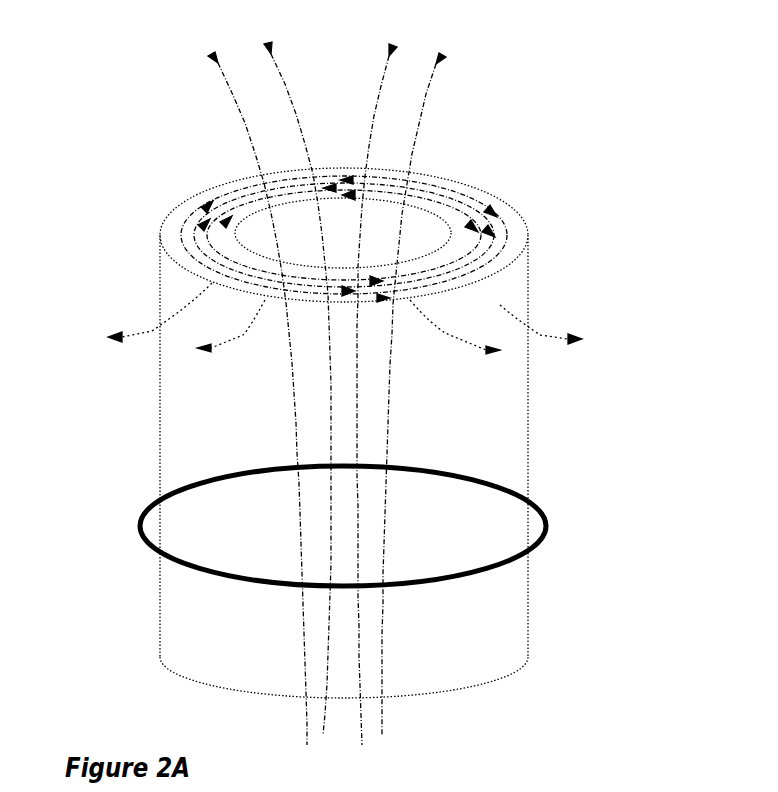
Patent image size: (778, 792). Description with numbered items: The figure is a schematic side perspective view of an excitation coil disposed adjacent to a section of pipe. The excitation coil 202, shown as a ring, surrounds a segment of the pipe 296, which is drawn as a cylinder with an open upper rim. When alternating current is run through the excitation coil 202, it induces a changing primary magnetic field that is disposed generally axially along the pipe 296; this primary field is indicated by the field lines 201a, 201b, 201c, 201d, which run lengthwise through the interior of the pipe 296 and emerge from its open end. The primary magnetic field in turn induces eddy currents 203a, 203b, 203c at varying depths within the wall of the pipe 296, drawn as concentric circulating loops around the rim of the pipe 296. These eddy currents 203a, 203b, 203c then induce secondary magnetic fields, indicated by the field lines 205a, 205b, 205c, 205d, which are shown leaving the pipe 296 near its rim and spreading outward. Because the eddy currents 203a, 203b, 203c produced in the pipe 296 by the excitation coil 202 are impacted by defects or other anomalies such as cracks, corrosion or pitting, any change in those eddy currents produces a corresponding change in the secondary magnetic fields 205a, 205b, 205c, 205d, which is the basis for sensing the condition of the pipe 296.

The field line 201a is at (228, 72).
The field line 201b is at (281, 64).
The field line 201c is at (383, 71).
The field line 201d is at (426, 91).
The excitation coil 202 is at (547, 520).
The eddy current 203a is at (220, 201).
The eddy current 203b is at (180, 222).
The eddy current 203c is at (185, 268).
The field line 205a is at (152, 330).
The field line 205b is at (267, 318).
The field line 205c is at (410, 305).
The field line 205d is at (548, 333).
The pipe 296 is at (521, 213).